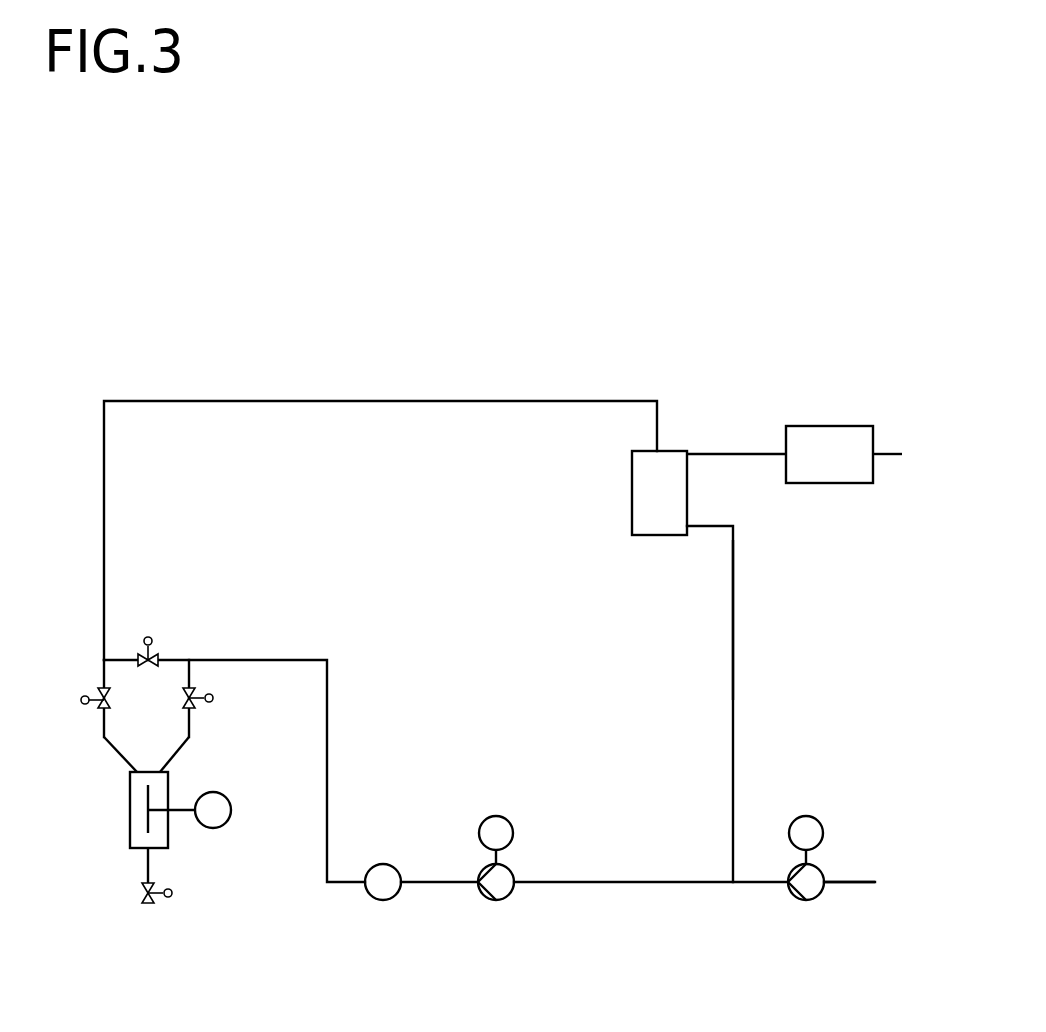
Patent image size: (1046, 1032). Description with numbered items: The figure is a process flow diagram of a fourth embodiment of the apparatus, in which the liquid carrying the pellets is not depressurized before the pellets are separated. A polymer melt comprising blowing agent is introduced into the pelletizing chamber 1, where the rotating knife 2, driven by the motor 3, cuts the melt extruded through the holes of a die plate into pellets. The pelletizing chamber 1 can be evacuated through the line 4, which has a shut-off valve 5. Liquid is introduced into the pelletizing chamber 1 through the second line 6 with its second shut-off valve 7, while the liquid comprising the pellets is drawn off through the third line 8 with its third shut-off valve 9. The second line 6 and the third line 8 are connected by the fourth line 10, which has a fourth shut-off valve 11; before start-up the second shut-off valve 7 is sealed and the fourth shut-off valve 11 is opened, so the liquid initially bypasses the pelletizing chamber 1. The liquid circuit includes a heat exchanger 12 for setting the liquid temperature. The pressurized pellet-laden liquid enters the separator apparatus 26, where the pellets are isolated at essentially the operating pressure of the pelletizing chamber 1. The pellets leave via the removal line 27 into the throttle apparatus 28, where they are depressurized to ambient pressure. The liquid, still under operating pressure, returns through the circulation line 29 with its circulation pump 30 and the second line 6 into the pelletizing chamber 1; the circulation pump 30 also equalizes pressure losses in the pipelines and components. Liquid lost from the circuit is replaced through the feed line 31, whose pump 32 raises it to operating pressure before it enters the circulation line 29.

The pelletizing chamber 1 is at (130, 800).
The rotating knife 2 is at (152, 826).
The motor 3 is at (230, 800).
The line 4 is at (147, 871).
The shut-off valve 5 is at (153, 902).
The second line 6 is at (190, 738).
The second shut-off valve 7 is at (200, 697).
The third line 8 is at (120, 755).
The third shut-off valve 9 is at (100, 710).
The fourth line 10 is at (172, 658).
The fourth shut-off valve 11 is at (150, 668).
The heat exchanger 12 is at (372, 900).
The separator apparatus 26 is at (632, 488).
The removal line 27 is at (710, 452).
The throttle apparatus 28 is at (814, 426).
The circulation line 29 is at (735, 592).
The circulation pump 30 is at (502, 900).
The feed line 31 is at (843, 884).
The pump 32 is at (812, 900).